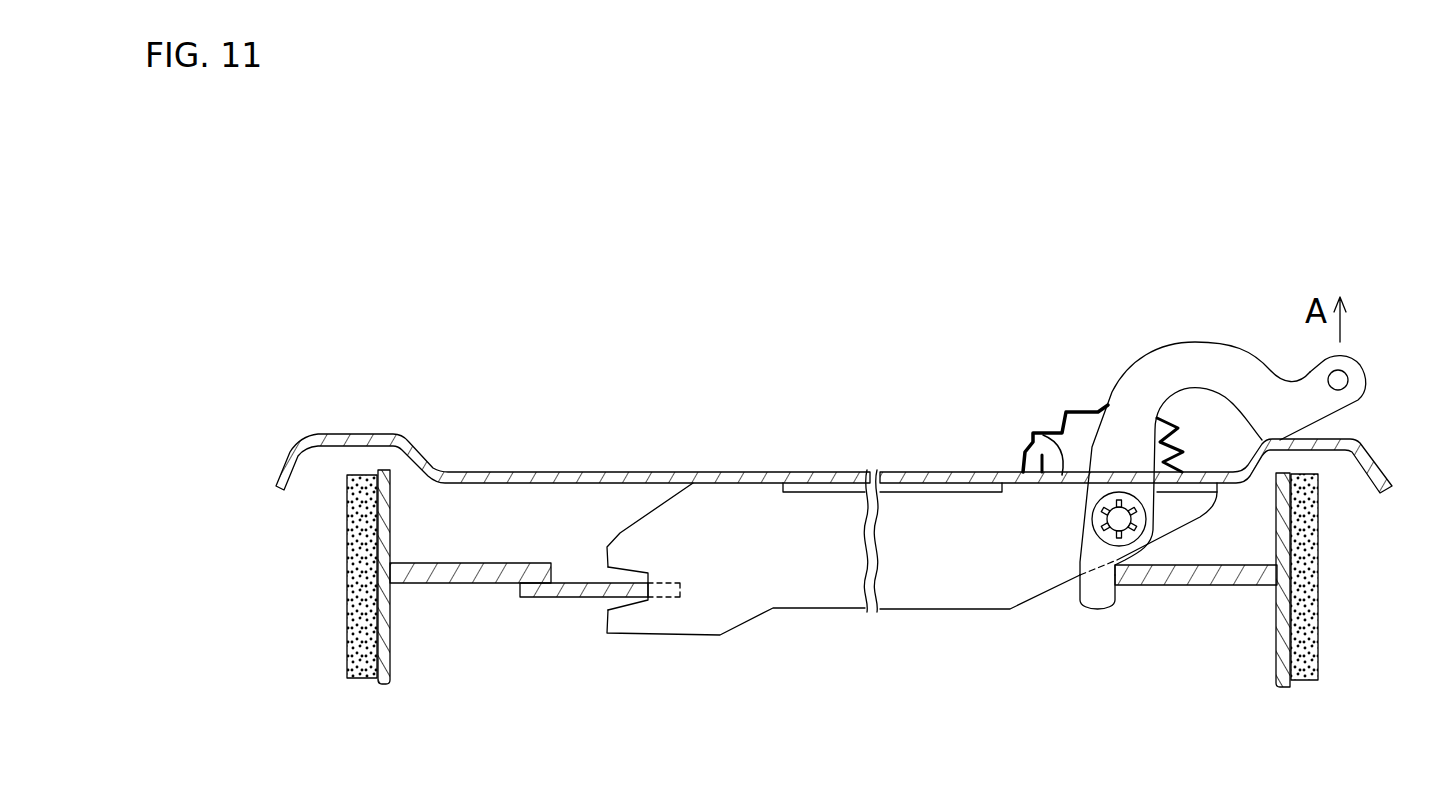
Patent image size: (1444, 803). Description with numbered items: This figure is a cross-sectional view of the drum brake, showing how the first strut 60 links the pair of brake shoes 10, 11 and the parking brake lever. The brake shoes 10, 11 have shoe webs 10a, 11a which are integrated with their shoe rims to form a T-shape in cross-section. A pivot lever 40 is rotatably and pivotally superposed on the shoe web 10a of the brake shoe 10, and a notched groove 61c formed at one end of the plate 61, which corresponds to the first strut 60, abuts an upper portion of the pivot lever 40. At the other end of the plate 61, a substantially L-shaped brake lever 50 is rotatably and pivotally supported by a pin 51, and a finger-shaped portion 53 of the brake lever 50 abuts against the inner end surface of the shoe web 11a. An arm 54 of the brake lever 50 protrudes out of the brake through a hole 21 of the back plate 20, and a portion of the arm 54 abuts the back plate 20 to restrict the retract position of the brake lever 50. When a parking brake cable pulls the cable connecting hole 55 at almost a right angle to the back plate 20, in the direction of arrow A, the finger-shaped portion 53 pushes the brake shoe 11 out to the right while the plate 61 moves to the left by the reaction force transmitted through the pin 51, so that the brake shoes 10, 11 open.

The brake shoe 10 is at (338, 587).
The shoe web 10a is at (455, 585).
The brake shoe 11 is at (1325, 607).
The shoe web 11a is at (1178, 585).
The back plate 20 is at (488, 470).
The hole 21 is at (1042, 433).
The pivot lever 40 is at (553, 598).
The brake lever 50 is at (1188, 350).
The pin 51 is at (1143, 531).
The finger-shaped portion 53 is at (1095, 612).
The arm 54 is at (1338, 408).
The cable connecting hole 55 is at (1348, 377).
The first strut 60 is at (818, 609).
The plate 61 is at (948, 600).
The notched groove 61c is at (637, 590).